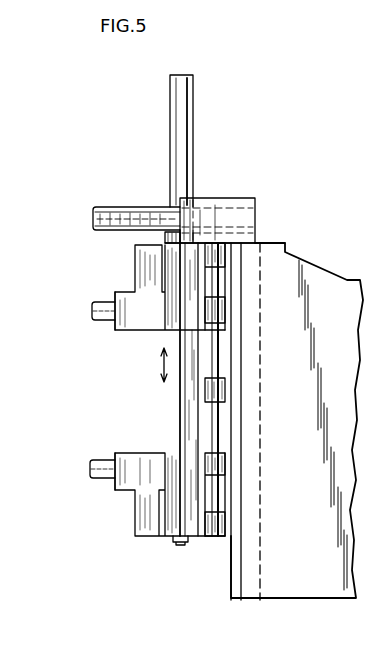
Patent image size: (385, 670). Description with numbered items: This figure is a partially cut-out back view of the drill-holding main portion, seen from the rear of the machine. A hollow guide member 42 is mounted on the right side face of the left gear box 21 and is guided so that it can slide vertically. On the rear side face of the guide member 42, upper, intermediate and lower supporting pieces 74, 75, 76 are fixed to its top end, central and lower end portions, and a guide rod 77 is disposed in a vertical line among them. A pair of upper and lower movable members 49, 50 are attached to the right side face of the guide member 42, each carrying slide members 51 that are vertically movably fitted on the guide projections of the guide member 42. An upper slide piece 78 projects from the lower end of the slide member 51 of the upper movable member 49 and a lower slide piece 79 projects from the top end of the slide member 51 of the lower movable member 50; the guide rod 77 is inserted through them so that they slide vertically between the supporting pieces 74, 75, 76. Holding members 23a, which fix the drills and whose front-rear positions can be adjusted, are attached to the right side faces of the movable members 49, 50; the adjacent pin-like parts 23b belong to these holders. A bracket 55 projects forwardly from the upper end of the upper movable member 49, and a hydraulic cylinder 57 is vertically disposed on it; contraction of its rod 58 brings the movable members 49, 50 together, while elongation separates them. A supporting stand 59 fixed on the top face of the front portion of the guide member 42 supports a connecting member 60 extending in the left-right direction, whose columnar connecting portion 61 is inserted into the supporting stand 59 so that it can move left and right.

The left gear box 21 is at (318, 270).
The holding member 23a is at (125, 330).
The mounting pin 23b is at (95, 302).
The guide member 42 is at (229, 368).
The upper movable member 49 is at (168, 262).
The lower movable member 50 is at (170, 510).
The slide member 51 is at (170, 308).
The bracket 55 is at (165, 240).
The hydraulic cylinder 57 is at (177, 140).
The rod 58 is at (180, 405).
The supporting stand 59 is at (220, 207).
The connecting member 60 is at (121, 196).
The columnar connecting portion 61 is at (150, 213).
The upper supporting piece 74 is at (227, 258).
The intermediate supporting piece 75 is at (225, 392).
The lower supporting piece 76 is at (223, 527).
The guide rod 77 is at (217, 345).
The upper slide piece 78 is at (227, 315).
The lower slide piece 79 is at (223, 462).